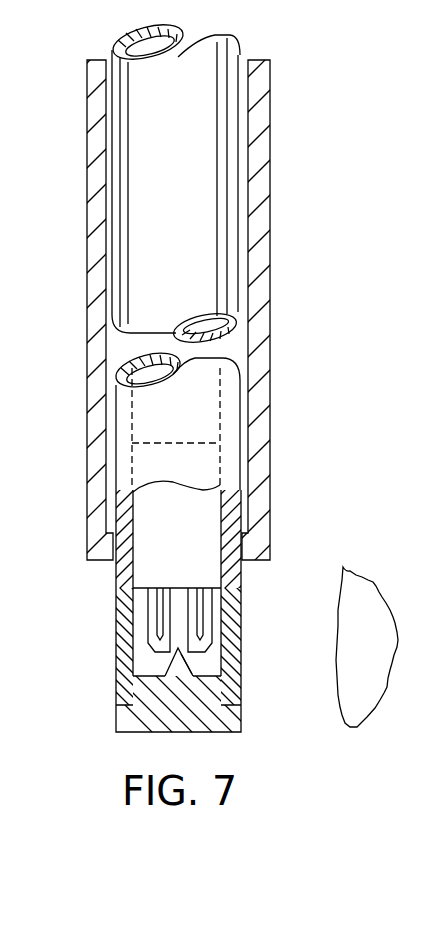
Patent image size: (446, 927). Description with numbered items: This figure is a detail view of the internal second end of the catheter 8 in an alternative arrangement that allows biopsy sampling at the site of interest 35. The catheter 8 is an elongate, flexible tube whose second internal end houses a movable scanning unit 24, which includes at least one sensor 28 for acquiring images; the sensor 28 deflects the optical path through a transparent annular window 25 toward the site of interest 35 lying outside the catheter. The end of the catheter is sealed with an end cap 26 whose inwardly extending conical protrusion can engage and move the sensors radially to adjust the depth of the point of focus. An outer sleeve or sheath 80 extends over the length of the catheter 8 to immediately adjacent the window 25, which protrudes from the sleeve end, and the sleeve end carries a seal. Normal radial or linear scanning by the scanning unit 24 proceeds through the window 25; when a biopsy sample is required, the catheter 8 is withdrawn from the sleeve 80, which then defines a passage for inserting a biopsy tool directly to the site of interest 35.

The catheter 8 is at (207, 215).
The outer sleeve or sheath 80 is at (258, 288).
The scanning unit 24 is at (160, 571).
The transparent annular window 25 is at (237, 648).
The end cap 26 is at (172, 707).
The sensor 28 is at (155, 615).
The site of interest 35 is at (386, 655).